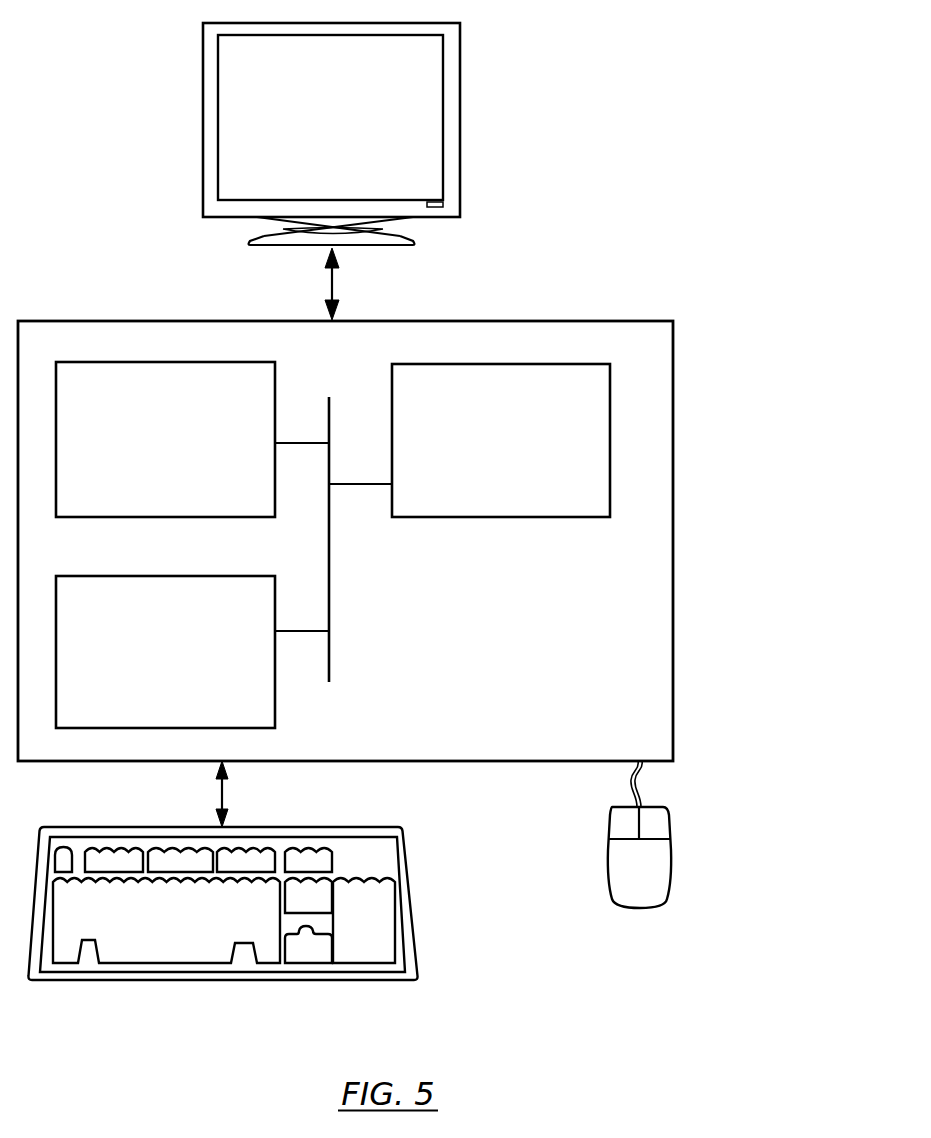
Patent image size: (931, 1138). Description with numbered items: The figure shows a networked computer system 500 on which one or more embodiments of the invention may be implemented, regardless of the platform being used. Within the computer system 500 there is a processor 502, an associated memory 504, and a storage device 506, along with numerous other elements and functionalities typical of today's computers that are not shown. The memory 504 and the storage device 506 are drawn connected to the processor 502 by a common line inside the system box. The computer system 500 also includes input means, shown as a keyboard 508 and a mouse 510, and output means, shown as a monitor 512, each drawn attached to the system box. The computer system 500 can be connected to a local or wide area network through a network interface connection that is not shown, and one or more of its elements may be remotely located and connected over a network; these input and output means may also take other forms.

The networked computer system 500 is at (722, 333).
The processor 502 is at (480, 436).
The memory 504 is at (145, 438).
The storage device 506 is at (145, 652).
The keyboard 508 is at (143, 918).
The mouse 510 is at (668, 910).
The monitor 512 is at (307, 128).